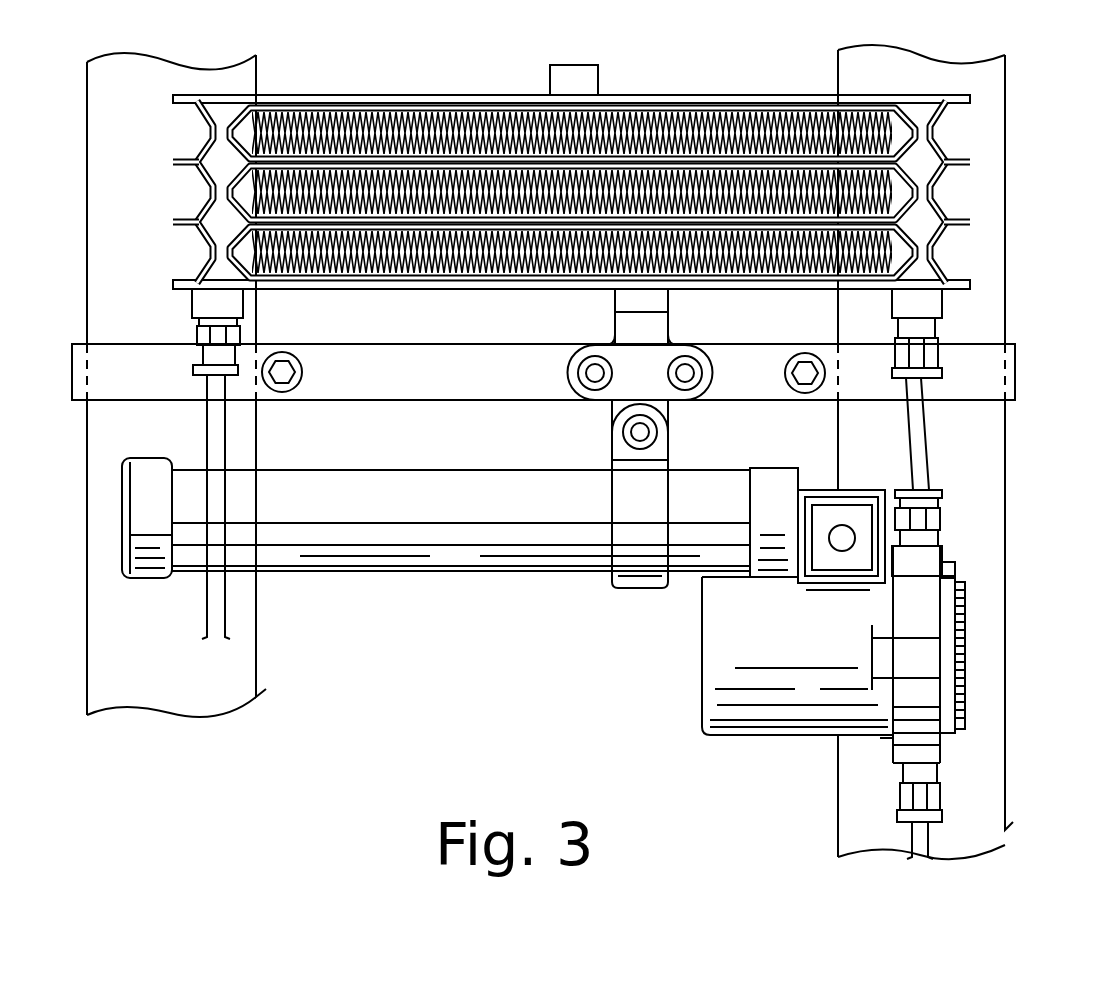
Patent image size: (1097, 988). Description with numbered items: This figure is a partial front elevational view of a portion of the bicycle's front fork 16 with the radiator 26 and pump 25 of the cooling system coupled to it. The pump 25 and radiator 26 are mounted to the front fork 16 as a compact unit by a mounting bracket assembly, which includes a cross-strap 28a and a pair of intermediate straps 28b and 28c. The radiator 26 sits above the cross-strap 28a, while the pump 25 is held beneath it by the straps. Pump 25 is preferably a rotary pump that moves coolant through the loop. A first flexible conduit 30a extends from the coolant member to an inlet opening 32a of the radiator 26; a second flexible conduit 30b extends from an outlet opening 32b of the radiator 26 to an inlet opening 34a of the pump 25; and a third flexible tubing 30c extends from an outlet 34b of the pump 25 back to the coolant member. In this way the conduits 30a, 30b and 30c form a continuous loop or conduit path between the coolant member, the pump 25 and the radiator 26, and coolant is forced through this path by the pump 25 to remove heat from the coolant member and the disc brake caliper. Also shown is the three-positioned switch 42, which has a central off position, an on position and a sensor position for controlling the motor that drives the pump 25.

The front fork 16 is at (256, 667).
The pump 25 is at (776, 742).
The radiator 26 is at (386, 90).
The cross-strap 28a is at (440, 343).
The intermediate strap 28b is at (668, 440).
The intermediate strap 28c is at (672, 324).
The first flexible conduit 30a is at (227, 598).
The second flexible conduit 30b is at (928, 428).
The third flexible tubing 30c is at (928, 852).
The inlet opening 32a is at (237, 312).
The outlet opening 32b is at (942, 305).
The inlet opening 34a is at (942, 546).
The outlet 34b is at (940, 768).
The three-positioned switch 42 is at (845, 513).